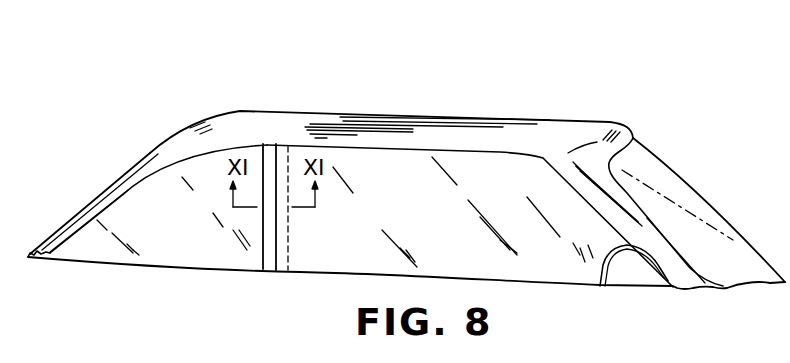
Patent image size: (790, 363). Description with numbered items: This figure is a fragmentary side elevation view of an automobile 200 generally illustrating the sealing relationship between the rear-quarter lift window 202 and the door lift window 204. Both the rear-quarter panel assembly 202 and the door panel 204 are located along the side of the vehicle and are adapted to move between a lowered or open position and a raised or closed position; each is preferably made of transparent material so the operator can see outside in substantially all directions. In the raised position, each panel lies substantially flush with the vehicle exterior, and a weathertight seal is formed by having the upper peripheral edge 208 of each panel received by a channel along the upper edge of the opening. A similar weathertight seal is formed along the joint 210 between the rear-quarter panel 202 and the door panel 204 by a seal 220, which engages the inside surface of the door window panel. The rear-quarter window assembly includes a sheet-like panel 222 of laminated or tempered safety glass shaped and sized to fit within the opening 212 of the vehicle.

The automobile 200 is at (233, 112).
The rear-quarter lift window 202 is at (152, 195).
The door lift window 204 is at (472, 239).
The upper peripheral edge 208 is at (347, 148).
The joint 210 is at (273, 167).
The opening 212 is at (117, 199).
The seal 220 is at (288, 238).
The sheet-like panel 222 is at (213, 237).